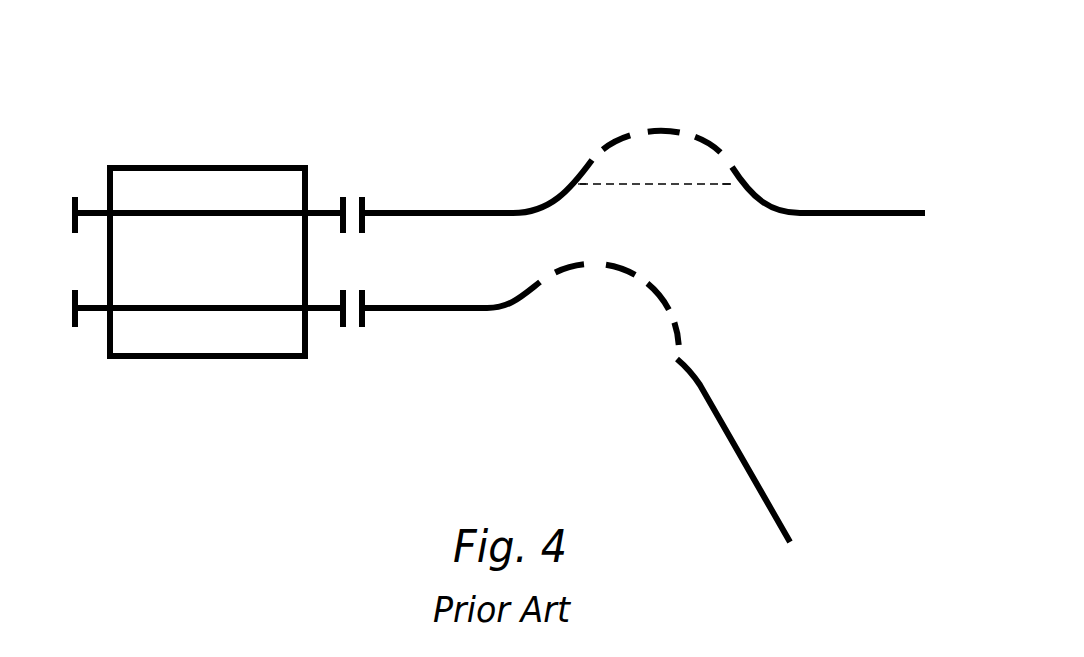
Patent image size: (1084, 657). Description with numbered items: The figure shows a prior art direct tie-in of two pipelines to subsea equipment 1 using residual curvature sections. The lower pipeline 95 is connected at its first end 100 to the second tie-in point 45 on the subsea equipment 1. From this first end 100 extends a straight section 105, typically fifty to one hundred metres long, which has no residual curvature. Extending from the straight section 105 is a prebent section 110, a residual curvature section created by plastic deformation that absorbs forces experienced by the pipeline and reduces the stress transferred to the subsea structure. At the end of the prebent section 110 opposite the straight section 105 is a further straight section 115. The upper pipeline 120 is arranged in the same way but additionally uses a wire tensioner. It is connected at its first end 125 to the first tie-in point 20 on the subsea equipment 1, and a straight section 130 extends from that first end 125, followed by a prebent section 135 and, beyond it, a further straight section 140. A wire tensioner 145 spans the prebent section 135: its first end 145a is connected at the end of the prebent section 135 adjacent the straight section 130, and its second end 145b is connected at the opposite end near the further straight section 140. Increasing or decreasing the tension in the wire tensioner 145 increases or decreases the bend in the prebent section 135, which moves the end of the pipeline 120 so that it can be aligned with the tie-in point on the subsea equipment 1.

The subsea equipment 1 is at (223, 328).
The first tie-in point 20 is at (341, 211).
The second tie-in point 45 is at (345, 294).
The pipeline 95 is at (679, 375).
The first end 100 is at (364, 317).
The straight section 105 is at (454, 313).
The prebent section 110 is at (654, 302).
The further straight section 115 is at (748, 462).
The pipeline 120 is at (738, 87).
The first end 125 is at (363, 205).
The straight section 130 is at (472, 212).
The prebent section 135 is at (622, 134).
The further straight section 140 is at (872, 215).
The wire tensioner 145 is at (661, 186).
The first end of wire tensioner 145a is at (581, 186).
The second end of wire tensioner 145b is at (734, 186).